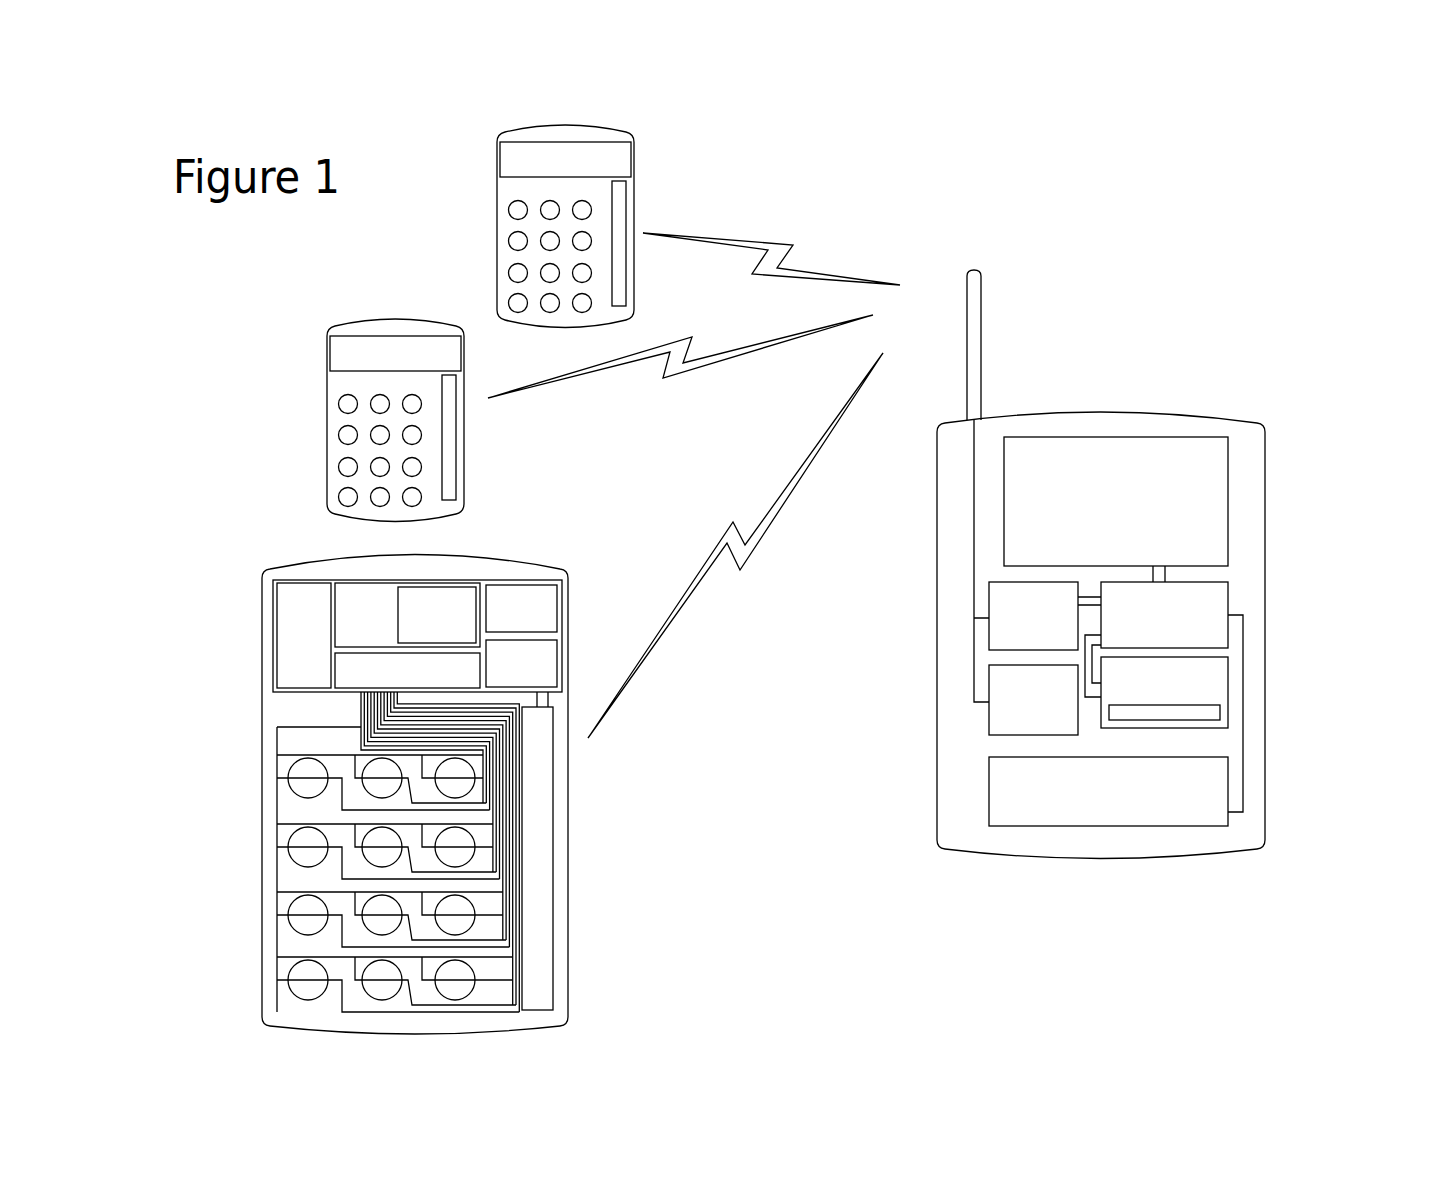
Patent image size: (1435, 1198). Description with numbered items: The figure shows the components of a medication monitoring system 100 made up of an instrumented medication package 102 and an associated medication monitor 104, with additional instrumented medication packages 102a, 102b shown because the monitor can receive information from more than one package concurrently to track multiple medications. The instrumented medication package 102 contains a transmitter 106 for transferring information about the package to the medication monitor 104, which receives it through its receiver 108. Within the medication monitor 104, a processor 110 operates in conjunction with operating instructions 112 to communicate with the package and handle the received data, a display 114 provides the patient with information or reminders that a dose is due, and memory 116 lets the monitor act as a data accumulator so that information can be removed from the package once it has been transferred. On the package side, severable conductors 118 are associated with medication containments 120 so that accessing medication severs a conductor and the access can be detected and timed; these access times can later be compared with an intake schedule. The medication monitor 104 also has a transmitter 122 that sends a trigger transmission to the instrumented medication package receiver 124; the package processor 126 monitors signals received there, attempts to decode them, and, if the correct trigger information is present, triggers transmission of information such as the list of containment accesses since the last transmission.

The medication monitoring system 100 is at (722, 824).
The instrumented medication package 102 is at (430, 778).
The instrumented medication package 102a is at (503, 188).
The instrumented medication package 102b is at (333, 382).
The medication monitor 104 is at (1101, 564).
The transmitter 106 is at (548, 593).
The receiver 108 is at (1000, 721).
The processor 110 is at (1218, 604).
The operating instructions 112 is at (1215, 718).
The display 114 is at (1017, 506).
The memory 116 is at (1221, 683).
The severable conductors 118 is at (310, 775).
The medication containments 120 is at (310, 857).
The transmitter 122 is at (1003, 633).
The instrumented medication package receiver 124 is at (540, 661).
The processor 126 is at (400, 612).